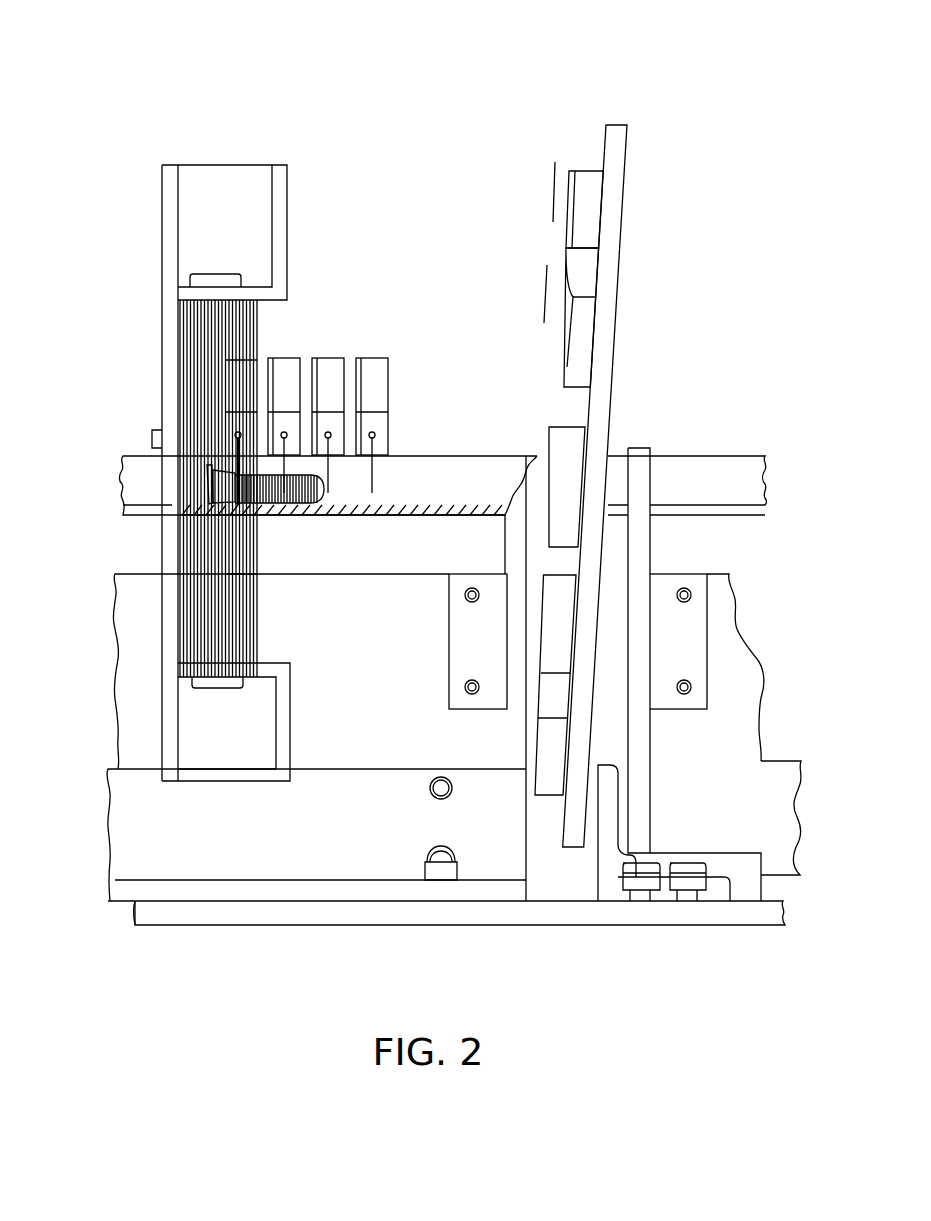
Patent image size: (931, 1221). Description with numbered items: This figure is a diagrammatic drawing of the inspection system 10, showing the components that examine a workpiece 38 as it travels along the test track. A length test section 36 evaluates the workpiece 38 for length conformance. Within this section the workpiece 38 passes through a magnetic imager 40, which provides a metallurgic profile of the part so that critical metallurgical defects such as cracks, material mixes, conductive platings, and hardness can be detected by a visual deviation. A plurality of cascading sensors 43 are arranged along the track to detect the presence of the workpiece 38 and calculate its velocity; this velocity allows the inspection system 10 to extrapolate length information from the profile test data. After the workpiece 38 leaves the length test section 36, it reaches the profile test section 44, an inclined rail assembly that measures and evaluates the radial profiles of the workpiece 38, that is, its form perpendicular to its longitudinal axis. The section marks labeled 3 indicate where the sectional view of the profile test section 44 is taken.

The inspection system 10 is at (406, 88).
The length test section 36 is at (352, 228).
The magnetic imager 40 is at (208, 235).
The cascading sensors 43 is at (380, 357).
The workpiece 38 is at (220, 490).
The profile test section 44 is at (634, 356).
The section line for FIG. 3 is at (545, 190).